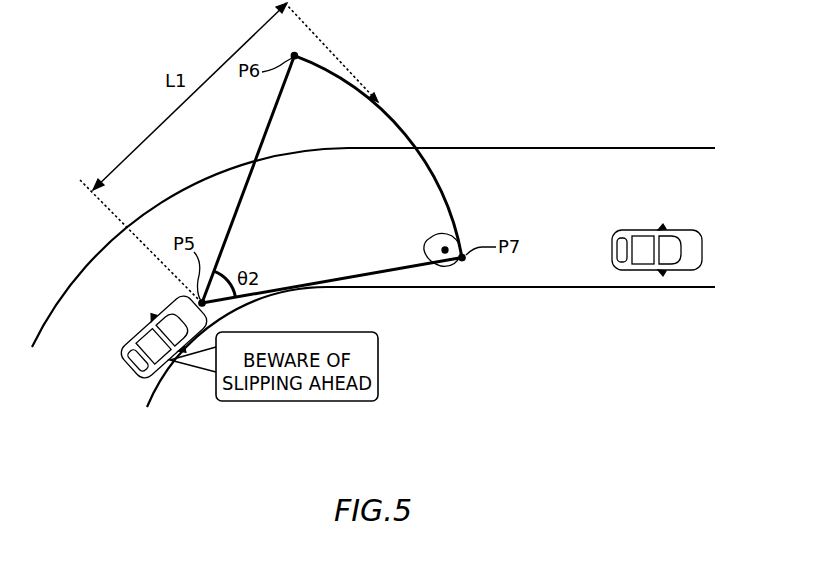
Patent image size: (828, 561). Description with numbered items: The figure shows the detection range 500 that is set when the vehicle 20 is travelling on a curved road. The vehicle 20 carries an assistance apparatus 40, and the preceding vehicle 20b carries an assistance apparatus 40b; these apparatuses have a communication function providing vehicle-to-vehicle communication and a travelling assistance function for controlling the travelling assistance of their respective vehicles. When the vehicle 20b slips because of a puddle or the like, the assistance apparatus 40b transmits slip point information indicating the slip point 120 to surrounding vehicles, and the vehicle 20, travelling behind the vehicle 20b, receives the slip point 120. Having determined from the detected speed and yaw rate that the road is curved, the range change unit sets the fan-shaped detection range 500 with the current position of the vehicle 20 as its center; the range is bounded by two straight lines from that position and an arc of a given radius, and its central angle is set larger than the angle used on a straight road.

The vehicle 20 is at (172, 311).
The assistance apparatus 40 is at (139, 338).
The detection range 500 is at (443, 190).
The slip point 120 is at (440, 268).
The vehicle 20b is at (690, 230).
The assistance apparatus 40b is at (644, 234).